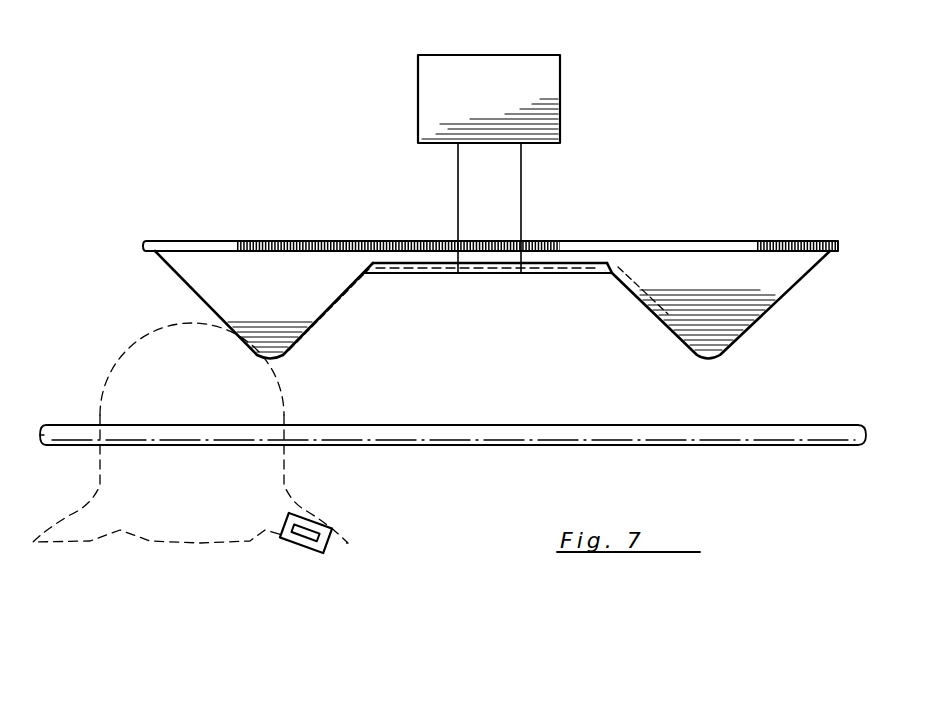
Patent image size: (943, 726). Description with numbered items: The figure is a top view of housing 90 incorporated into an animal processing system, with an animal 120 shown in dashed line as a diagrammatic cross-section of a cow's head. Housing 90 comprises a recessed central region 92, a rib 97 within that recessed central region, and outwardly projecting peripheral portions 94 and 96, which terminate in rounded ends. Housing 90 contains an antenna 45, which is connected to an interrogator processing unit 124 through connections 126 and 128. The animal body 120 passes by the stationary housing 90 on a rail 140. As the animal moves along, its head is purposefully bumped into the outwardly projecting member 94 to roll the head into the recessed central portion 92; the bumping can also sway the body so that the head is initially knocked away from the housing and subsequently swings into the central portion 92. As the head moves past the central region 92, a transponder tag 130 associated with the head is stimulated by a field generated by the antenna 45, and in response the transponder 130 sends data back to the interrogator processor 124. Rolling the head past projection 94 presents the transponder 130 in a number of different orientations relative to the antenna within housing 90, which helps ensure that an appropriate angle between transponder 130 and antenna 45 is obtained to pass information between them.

The housing 90 is at (490, 224).
The recessed central region 92 is at (468, 285).
The outwardly projecting peripheral portion 94 is at (287, 362).
The outwardly projecting peripheral portion 96 is at (727, 362).
The rib 97 is at (433, 280).
The antenna 45 is at (551, 257).
The interrogator processing unit 124 is at (445, 97).
The connection 126 is at (458, 194).
The connection 128 is at (521, 192).
The rail 140 is at (423, 447).
The animal 120 is at (105, 385).
The transponder tag 130 is at (300, 552).